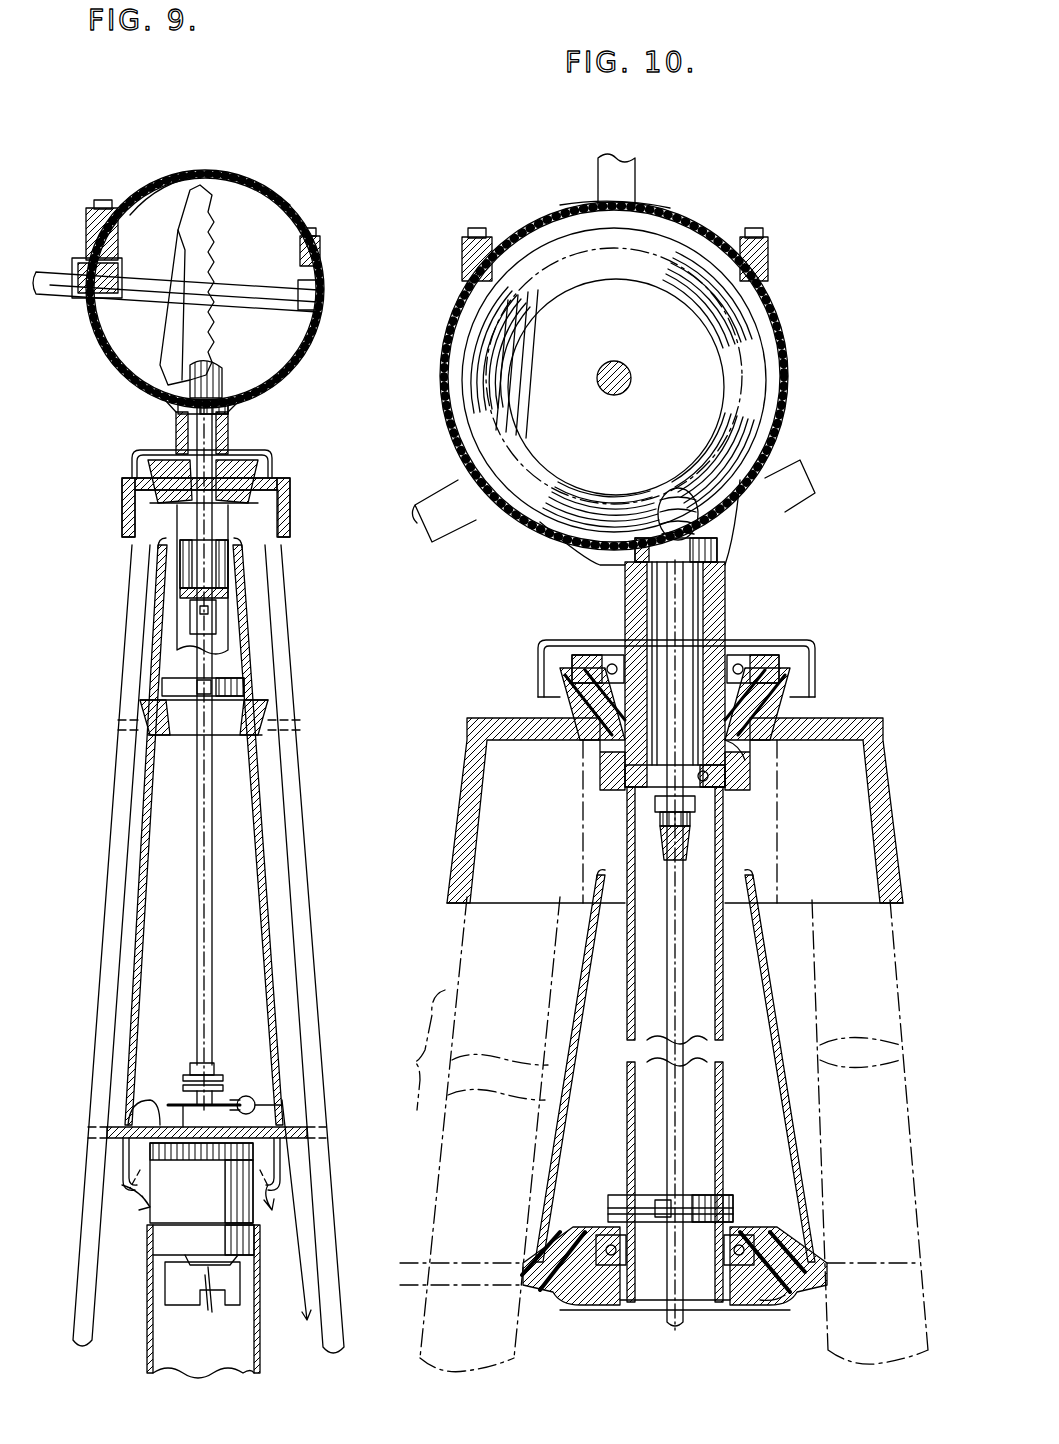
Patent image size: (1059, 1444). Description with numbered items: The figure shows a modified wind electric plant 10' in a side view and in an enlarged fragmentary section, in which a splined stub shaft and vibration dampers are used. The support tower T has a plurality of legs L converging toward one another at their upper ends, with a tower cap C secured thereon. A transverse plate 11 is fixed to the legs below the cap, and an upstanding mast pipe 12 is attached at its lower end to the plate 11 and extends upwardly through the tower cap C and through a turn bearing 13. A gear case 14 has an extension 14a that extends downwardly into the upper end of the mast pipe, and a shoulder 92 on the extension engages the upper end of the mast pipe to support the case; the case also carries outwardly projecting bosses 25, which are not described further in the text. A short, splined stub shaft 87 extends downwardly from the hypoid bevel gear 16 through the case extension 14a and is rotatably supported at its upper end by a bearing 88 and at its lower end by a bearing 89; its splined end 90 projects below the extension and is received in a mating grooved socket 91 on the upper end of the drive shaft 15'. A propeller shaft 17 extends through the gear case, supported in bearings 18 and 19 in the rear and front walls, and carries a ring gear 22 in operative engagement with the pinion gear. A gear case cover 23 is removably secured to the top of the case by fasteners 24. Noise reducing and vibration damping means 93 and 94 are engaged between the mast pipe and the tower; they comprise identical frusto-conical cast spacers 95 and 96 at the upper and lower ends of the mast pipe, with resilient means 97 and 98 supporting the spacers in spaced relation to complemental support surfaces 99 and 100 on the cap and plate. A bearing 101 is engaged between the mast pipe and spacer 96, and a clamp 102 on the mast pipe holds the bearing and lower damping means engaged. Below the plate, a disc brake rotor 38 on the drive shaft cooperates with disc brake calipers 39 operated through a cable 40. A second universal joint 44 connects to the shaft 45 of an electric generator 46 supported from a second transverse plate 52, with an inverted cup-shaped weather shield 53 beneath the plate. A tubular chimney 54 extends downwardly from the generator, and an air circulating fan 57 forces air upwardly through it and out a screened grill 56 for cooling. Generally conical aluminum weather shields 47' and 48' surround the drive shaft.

In FIG. 9, the modified wind electric plant 10' is at (69, 118).
In FIG. 10, the modified wind electric plant 10' is at (853, 205).
In FIG. 9, the transverse plate 11 is at (262, 742).
In FIG. 10, the transverse plate 11 is at (805, 1268).
In FIG. 9, the mast pipe 12 is at (232, 618).
In FIG. 10, the mast pipe 12 is at (726, 832).
In FIG. 9, the turn bearing 13 is at (240, 458).
In FIG. 10, the turn bearing 13 is at (740, 660).
In FIG. 9, the gear case 14 is at (323, 338).
In FIG. 10, the gear case 14 is at (796, 332).
In FIG. 9, the gear case extension 14a is at (176, 432).
In FIG. 10, the gear case extension 14a is at (726, 612).
In FIG. 9, the drive shaft 15' is at (239, 755).
In FIG. 10, the drive shaft 15' is at (735, 945).
In FIG. 9, the hypoid bevel gear 16 is at (218, 380).
In FIG. 10, the hypoid bevel gear 16 is at (672, 490).
In FIG. 9, the propeller shaft 17 is at (243, 292).
In FIG. 10, the propeller shaft 17 is at (630, 372).
In FIG. 9, the bearing 18 is at (318, 302).
In FIG. 9, the bearing 19 is at (102, 278).
In FIG. 9, the ring gear 22 is at (213, 213).
In FIG. 10, the ring gear 22 is at (512, 350).
In FIG. 9, the gear case cover 23 is at (283, 202).
In FIG. 10, the gear case cover 23 is at (672, 210).
In FIG. 9, the removable fasteners 24 is at (104, 206).
In FIG. 10, the removable fasteners 24 is at (482, 236).
In FIG. 10, the mounting boss 25 is at (598, 176).
In FIG. 9, the disc brake rotor 38 is at (182, 1104).
In FIG. 9, the disc brake calipers 39 is at (246, 1096).
In FIG. 9, the cable 40 is at (300, 1262).
In FIG. 9, the second universal joint 44 is at (196, 1068).
In FIG. 9, the generator shaft 45 is at (132, 1135).
In FIG. 9, the electric generator 46 is at (140, 1200).
In FIG. 9, the weather shield 47' is at (233, 831).
In FIG. 10, the weather shield 47' is at (691, 1066).
In FIG. 9, the weather shield 48' is at (297, 831).
In FIG. 9, the second transverse plate 52 is at (128, 1095).
In FIG. 9, the cup-shaped weather shield 53 is at (280, 1162).
In FIG. 9, the tubular shield or chimney 54 is at (262, 1350).
In FIG. 9, the screened grill 56 is at (172, 1160).
In FIG. 9, the air circulating fan 57 is at (182, 1305).
In FIG. 9, the splined stub shaft 87 is at (202, 552).
In FIG. 10, the splined stub shaft 87 is at (690, 598).
In FIG. 9, the bearing 88 is at (176, 418).
In FIG. 10, the bearing 88 is at (718, 552).
In FIG. 9, the bearing 89 is at (202, 585).
In FIG. 10, the bearing 89 is at (722, 776).
In FIG. 10, the splined end 90 is at (658, 818).
In FIG. 9, the grooved socket 91 is at (204, 612).
In FIG. 10, the grooved socket 91 is at (700, 842).
In FIG. 10, the shoulder 92 is at (592, 654).
In FIG. 10, the noise reducing and vibration damping means 93 is at (570, 700).
In FIG. 9, the noise reducing and vibration damping means 94 is at (184, 752).
In FIG. 10, the noise reducing and vibration damping means 94 is at (584, 1318).
In FIG. 9, the cast spacer 95 is at (132, 496).
In FIG. 10, the cast spacer 95 is at (770, 695).
In FIG. 9, the cast spacer 96 is at (148, 742).
In FIG. 10, the cast spacer 96 is at (750, 1236).
In FIG. 9, the resilient means 97 is at (150, 468).
In FIG. 10, the resilient means 97 is at (768, 724).
In FIG. 9, the resilient means 98 is at (150, 722).
In FIG. 10, the resilient means 98 is at (775, 1252).
In FIG. 10, the support surface 99 is at (732, 754).
In FIG. 10, the support surface 100 is at (748, 1292).
In FIG. 10, the bearing 101 is at (604, 1232).
In FIG. 9, the clamp 102 is at (170, 688).
In FIG. 10, the clamp 102 is at (735, 1204).
In FIG. 9, the tower cap C is at (290, 490).
In FIG. 10, the tower cap C is at (468, 720).
In FIG. 9, the support tower T is at (308, 792).
In FIG. 10, the support tower T is at (454, 948).
In FIG. 9, the legs L is at (102, 956).
In FIG. 10, the legs L is at (890, 942).